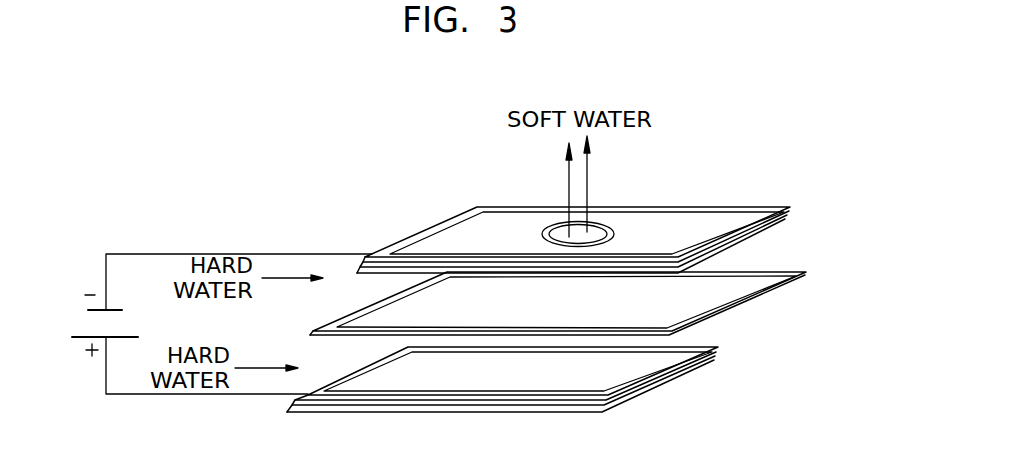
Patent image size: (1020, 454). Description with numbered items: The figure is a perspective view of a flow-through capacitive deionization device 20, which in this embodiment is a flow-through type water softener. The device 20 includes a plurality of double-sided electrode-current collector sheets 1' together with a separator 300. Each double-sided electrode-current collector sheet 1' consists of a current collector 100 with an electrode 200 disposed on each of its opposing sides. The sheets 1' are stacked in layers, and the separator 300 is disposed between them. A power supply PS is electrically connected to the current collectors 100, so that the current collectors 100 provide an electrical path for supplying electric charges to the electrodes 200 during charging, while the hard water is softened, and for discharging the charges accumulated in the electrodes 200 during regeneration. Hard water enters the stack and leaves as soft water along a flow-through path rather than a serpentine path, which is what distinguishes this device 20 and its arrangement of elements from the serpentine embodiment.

The flow-through capacitive deionization device 20 is at (718, 180).
The double-sided electrode-current collector sheet 1' is at (586, 301).
The electrode 200 is at (788, 210).
The current collector 100 is at (780, 225).
The separator 300 is at (747, 302).
The power supply PS is at (205, 324).